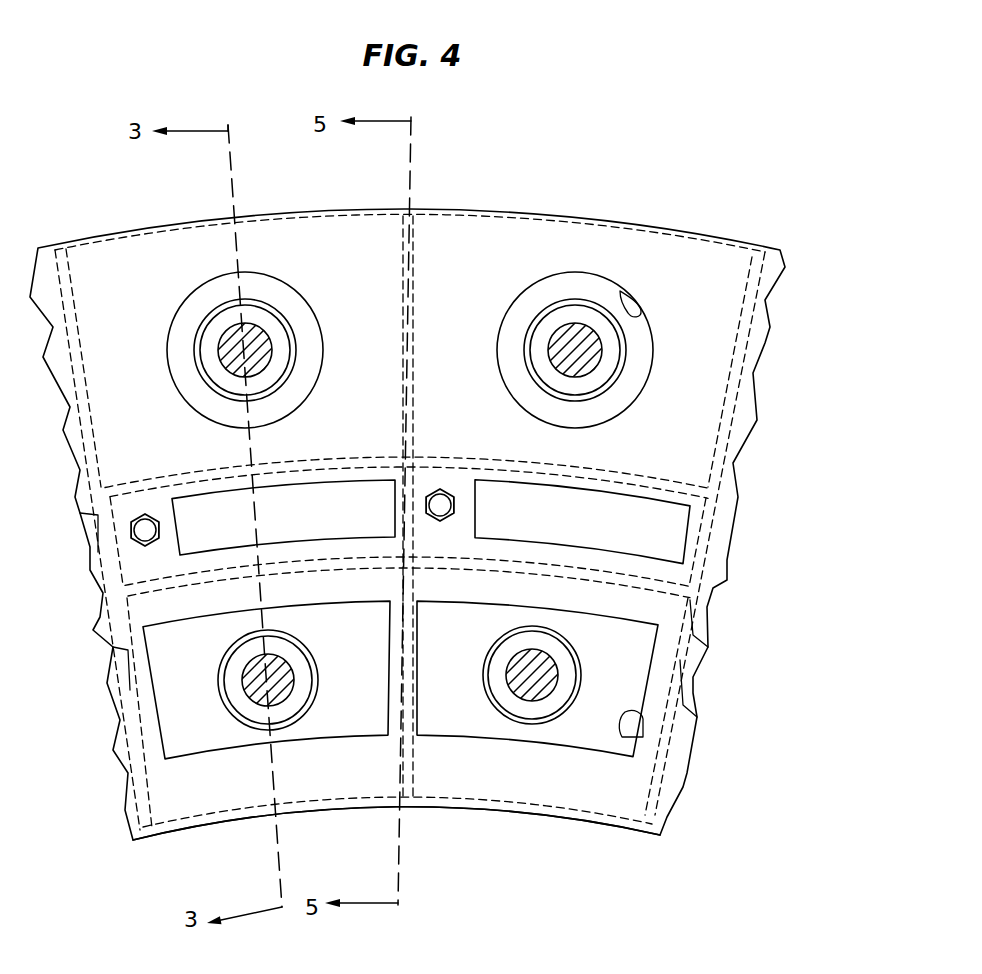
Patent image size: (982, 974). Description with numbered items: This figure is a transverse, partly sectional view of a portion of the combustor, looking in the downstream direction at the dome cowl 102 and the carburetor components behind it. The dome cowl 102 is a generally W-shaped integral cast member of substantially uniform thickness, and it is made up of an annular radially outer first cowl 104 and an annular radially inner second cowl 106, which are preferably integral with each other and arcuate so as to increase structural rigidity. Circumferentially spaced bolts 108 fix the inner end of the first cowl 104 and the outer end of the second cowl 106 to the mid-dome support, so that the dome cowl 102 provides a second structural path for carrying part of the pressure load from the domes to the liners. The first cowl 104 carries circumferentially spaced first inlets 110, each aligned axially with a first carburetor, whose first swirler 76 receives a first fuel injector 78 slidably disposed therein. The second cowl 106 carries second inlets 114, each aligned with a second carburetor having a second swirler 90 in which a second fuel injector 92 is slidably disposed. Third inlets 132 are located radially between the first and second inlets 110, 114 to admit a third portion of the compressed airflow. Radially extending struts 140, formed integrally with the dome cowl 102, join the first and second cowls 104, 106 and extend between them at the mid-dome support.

The first swirler 76 is at (277, 313).
The first fuel injector 78 is at (621, 413).
The second swirler 90 is at (317, 658).
The second fuel injector 92 is at (552, 665).
The dome cowl 102 is at (449, 533).
The first cowl 104 is at (723, 317).
The second cowl 106 is at (560, 800).
The bolts 108 is at (148, 527).
The first inlets 110 is at (641, 311).
The second inlets 114 is at (643, 737).
The third inlets 132 is at (675, 533).
The struts 140 is at (422, 293).